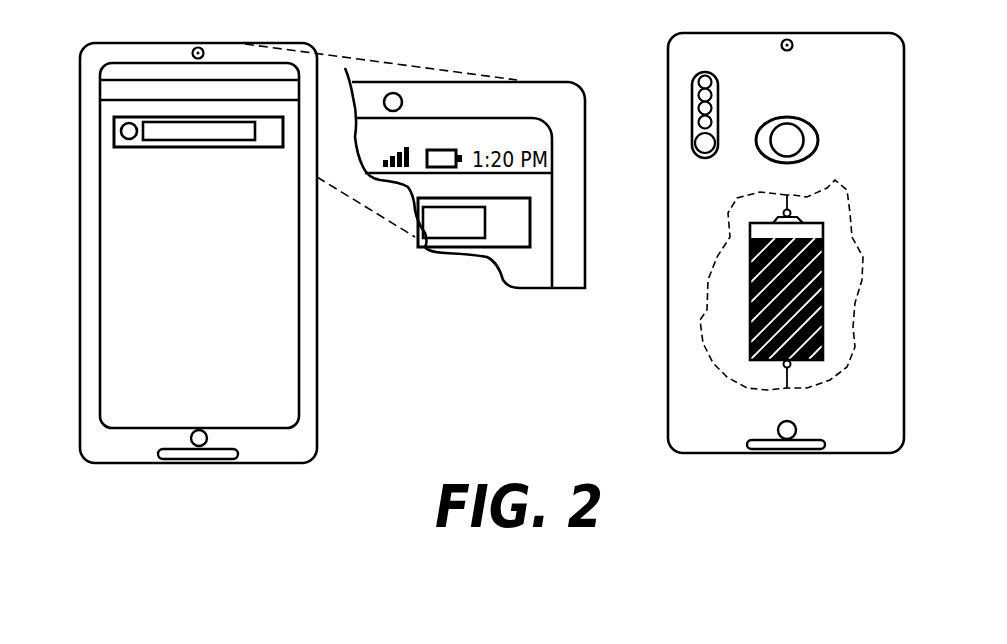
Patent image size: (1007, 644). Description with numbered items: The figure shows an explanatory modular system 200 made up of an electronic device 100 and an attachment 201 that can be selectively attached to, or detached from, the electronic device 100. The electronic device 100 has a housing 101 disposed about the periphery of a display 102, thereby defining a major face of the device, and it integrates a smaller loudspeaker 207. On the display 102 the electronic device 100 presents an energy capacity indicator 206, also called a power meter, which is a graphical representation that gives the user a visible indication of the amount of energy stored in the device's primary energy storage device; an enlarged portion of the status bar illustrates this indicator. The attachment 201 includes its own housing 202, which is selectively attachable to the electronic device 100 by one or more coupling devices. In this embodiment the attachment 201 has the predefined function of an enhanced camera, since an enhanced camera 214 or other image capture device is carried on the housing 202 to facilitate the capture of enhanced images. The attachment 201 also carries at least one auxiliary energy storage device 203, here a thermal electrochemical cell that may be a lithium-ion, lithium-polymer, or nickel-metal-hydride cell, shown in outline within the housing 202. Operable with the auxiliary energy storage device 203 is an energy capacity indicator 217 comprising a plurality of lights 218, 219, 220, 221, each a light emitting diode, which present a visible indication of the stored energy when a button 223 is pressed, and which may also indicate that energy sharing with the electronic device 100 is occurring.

The electronic device 100 is at (62, 105).
The housing 101 is at (317, 388).
The display 102 is at (270, 290).
The housing 202 is at (317, 230).
The loudspeaker 207 is at (198, 47).
The energy capacity indicator 206 is at (437, 155).
The system 200 is at (940, 118).
The attachment 201 is at (904, 233).
The enhanced camera 214 is at (785, 140).
The energy capacity indicator 217 is at (718, 102).
The light 218 is at (698, 78).
The light 219 is at (698, 92).
The light 220 is at (698, 107).
The light 221 is at (698, 122).
The button 223 is at (705, 146).
The auxiliary energy storage device 203 is at (823, 333).